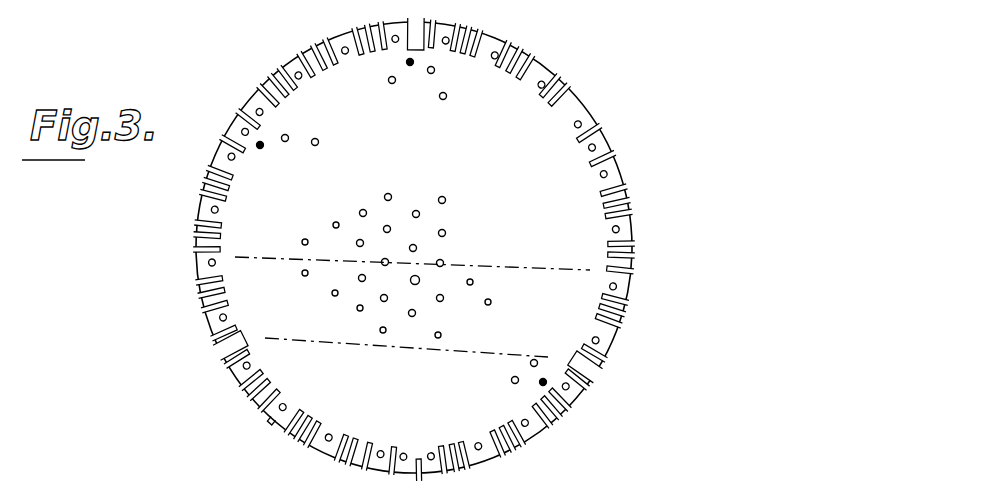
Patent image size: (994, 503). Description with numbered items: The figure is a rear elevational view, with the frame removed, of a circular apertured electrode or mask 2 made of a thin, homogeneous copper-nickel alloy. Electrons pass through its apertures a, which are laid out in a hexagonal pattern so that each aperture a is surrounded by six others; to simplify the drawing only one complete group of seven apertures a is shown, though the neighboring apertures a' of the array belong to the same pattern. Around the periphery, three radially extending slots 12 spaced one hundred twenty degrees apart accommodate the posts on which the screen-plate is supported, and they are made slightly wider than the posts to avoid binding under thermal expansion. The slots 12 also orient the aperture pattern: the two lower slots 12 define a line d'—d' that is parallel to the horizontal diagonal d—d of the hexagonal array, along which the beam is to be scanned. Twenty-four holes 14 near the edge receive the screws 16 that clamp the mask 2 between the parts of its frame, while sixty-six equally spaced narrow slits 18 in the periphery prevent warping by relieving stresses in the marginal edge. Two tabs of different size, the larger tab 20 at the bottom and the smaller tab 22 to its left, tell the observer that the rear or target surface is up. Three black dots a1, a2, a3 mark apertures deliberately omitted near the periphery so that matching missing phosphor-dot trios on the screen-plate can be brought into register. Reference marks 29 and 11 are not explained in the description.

The apertured mask 2 is at (512, 368).
The radially extending slots 12 is at (422, 23).
The holes 14 is at (250, 110).
The narrow slits 18 is at (258, 104).
The larger tab 20 is at (419, 481).
The smaller tab 22 is at (270, 427).
The screws 16 is at (418, 493).
The part 29 is at (325, 500).
The part 11 is at (695, 493).
The apertures a is at (414, 239).
The holes a' is at (406, 267).
The omitted aperture a1 is at (262, 148).
The omitted aperture a2 is at (410, 65).
The omitted aperture a3 is at (543, 378).
The horizontal diagonal d is at (412, 251).
The line defined by lower slots d' is at (415, 336).